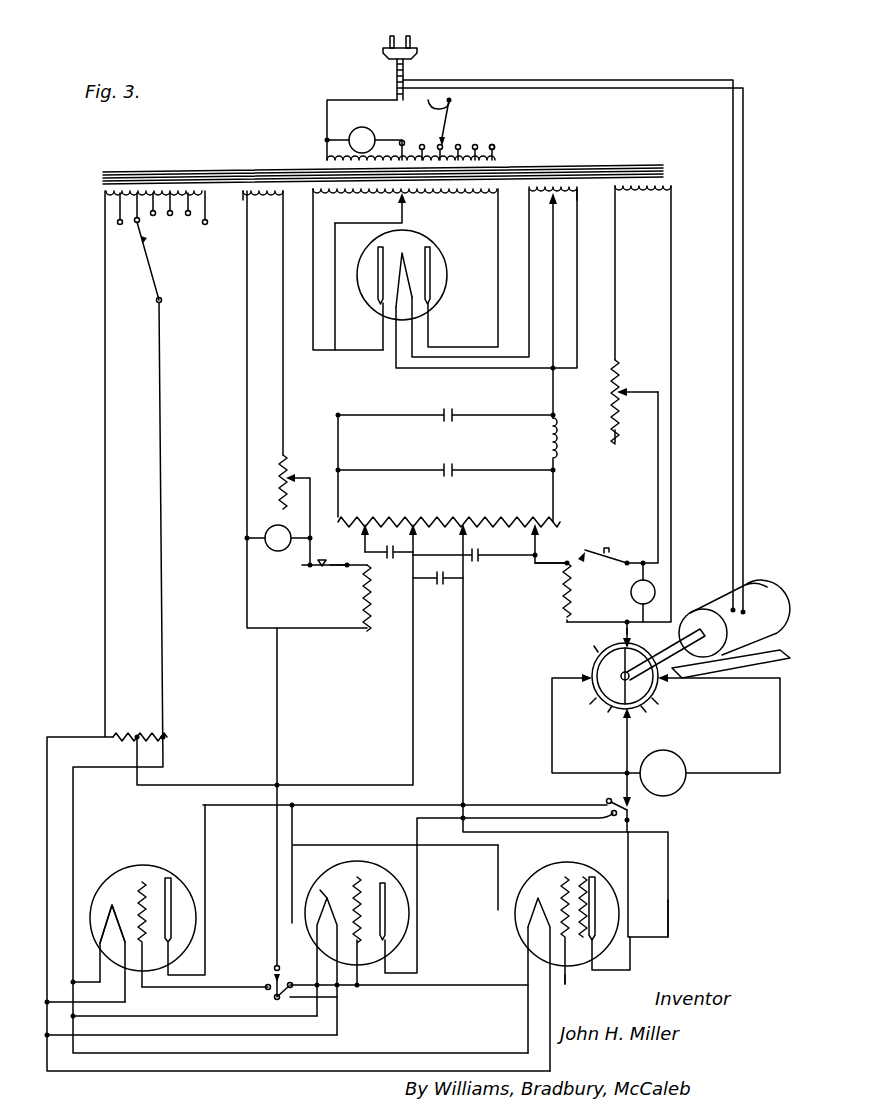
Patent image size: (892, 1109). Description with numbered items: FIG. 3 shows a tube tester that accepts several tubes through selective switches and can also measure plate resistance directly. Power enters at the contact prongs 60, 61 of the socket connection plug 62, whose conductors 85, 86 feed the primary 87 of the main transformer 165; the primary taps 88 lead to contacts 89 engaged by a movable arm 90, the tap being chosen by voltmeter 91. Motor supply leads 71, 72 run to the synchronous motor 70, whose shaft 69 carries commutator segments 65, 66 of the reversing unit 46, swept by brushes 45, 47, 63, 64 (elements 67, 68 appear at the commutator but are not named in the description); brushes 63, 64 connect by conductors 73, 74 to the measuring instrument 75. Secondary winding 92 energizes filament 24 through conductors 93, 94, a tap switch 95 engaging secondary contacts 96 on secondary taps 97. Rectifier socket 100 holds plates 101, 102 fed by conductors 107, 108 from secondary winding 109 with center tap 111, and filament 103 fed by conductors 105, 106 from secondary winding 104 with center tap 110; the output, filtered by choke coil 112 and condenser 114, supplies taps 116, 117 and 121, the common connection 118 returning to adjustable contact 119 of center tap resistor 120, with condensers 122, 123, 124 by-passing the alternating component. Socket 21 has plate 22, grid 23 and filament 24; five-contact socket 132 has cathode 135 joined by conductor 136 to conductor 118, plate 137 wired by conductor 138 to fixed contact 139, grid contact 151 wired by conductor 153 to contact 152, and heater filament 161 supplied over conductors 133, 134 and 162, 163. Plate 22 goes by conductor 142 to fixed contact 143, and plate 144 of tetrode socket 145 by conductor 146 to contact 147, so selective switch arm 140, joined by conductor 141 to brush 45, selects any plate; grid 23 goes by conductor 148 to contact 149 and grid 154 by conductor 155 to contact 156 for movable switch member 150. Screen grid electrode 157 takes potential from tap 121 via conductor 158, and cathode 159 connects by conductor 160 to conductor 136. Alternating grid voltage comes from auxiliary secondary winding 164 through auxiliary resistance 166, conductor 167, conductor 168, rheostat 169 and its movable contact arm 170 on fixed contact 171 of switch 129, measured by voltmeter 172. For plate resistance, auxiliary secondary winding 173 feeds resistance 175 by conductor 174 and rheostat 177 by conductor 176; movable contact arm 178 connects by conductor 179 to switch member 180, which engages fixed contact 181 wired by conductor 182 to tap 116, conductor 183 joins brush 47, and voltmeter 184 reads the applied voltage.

The tube socket 21 is at (158, 880).
The plate 22 is at (173, 896).
The grid 23 is at (140, 878).
The filament 24 is at (105, 910).
The brush 45 is at (636, 712).
The reversing unit 46 is at (660, 650).
The brush 47 is at (630, 640).
The contact prong 60 is at (388, 50).
The contact prong 61 is at (412, 44).
The socket connection plug 62 is at (405, 66).
The brush 63 is at (594, 700).
The brush 64 is at (660, 702).
The commutator segment 65 is at (596, 656).
The commutator segment 66 is at (614, 708).
The lead 67 is at (622, 640).
The contact 68 is at (648, 708).
The shaft 69 is at (700, 656).
The synchronous A. C. motor 70 is at (725, 595).
The motor supply lead 71 is at (733, 450).
The motor supply lead 72 is at (743, 476).
The conductor 73 is at (552, 728).
The conductor 74 is at (780, 716).
The measuring instrument 75 is at (682, 785).
The conductor 85 is at (372, 100).
The conductor 86 is at (452, 102).
The primary 87 is at (400, 140).
The taps 88 is at (495, 152).
The contacts 89 is at (496, 144).
The movable arm 90 is at (450, 130).
The voltmeter 91 is at (368, 128).
The secondary winding 92 is at (145, 190).
The conductor 93 is at (105, 395).
The conductor 94 is at (164, 424).
The tap switch 95 is at (151, 280).
The secondary contacts 96 is at (202, 224).
The secondary taps 97 is at (243, 210).
The socket 100 is at (446, 275).
The plate 101 is at (378, 263).
The plate 102 is at (432, 253).
The filament 103 is at (412, 288).
The secondary winding 104 is at (550, 186).
The conductor 105 is at (529, 333).
The conductor 106 is at (600, 294).
The conductor 107 is at (313, 262).
The conductor 108 is at (497, 334).
The secondary winding 109 is at (442, 190).
The center tap 110 is at (556, 257).
The center tap 111 is at (336, 328).
The choke coil 112 is at (446, 512).
The condenser 114 is at (460, 466).
The tap 116 is at (532, 548).
The tap 117 is at (365, 548).
The common connection 118 is at (413, 683).
The adjustable contact 119 is at (140, 752).
The center tap resistor 120 is at (135, 735).
The tap 121 is at (466, 623).
The condenser 122 is at (392, 558).
The condenser 123 is at (440, 586).
The condenser 124 is at (480, 562).
The switch arm 129 is at (332, 570).
The five contact socket 132 is at (380, 862).
The conductor 133 is at (138, 1016).
The conductor 134 is at (183, 1072).
The cathode 135 is at (355, 884).
The conductor 136 is at (294, 880).
The plate 137 is at (386, 885).
The conductor 138 is at (418, 902).
The fixed contact 139 is at (606, 800).
The selective switch arm 140 is at (622, 773).
The conductor 141 is at (628, 740).
The conductor 142 is at (362, 805).
The fixed contact 143 is at (632, 816).
The plate 144 is at (598, 897).
The tetrode socket 145 is at (562, 874).
The conductor 146 is at (670, 866).
The contact 147 is at (632, 822).
The conductor 148 is at (262, 984).
The contact 149 is at (276, 990).
The movable switch member 150 is at (277, 962).
The grid contact 151 is at (355, 870).
The contact 152 is at (300, 995).
The conductor 153 is at (380, 988).
The grid 154 is at (594, 874).
The conductor 155 is at (526, 1012).
The contact 156 is at (277, 1000).
The screen grid electrode 157 is at (634, 952).
The conductor 158 is at (670, 926).
The cathode 159 is at (520, 880).
The conductor 160 is at (496, 882).
The heater filament 161 is at (316, 928).
The conductor 162 is at (462, 988).
The conductor 163 is at (566, 990).
The auxiliary secondary winding 164 is at (256, 186).
The main transformer 165 is at (313, 162).
The auxiliary resistance 166 is at (372, 620).
The conductor 167 is at (247, 372).
The conductor 168 is at (284, 383).
The rheostat 169 is at (289, 466).
The movable contact arm 170 is at (312, 498).
The fixed contact 171 is at (312, 568).
The voltmeter 172 is at (268, 528).
The auxiliary secondary winding 173 is at (648, 184).
The conductor 174 is at (672, 268).
The resistance 175 is at (560, 626).
The conductor 176 is at (617, 322).
The rheostat 177 is at (614, 408).
The movable contact arm 178 is at (640, 392).
The conductor 179 is at (658, 490).
The movable switch member 180 is at (612, 550).
The fixed contact 181 is at (574, 578).
The conductor 182 is at (548, 560).
The conductor 183 is at (620, 636).
The voltmeter 184 is at (652, 578).